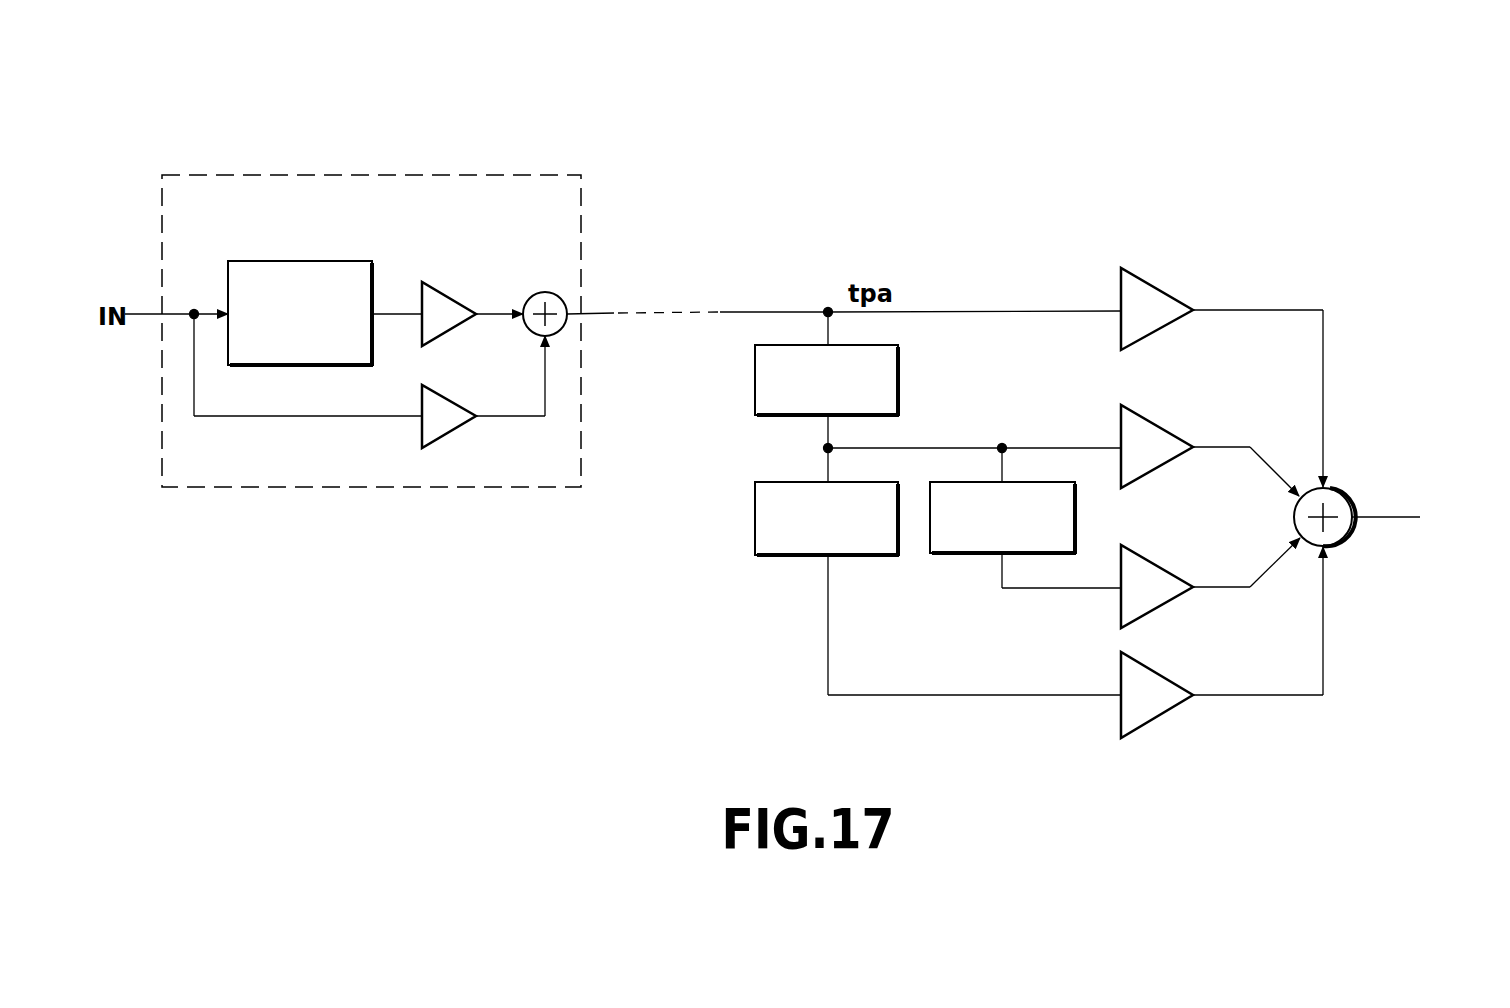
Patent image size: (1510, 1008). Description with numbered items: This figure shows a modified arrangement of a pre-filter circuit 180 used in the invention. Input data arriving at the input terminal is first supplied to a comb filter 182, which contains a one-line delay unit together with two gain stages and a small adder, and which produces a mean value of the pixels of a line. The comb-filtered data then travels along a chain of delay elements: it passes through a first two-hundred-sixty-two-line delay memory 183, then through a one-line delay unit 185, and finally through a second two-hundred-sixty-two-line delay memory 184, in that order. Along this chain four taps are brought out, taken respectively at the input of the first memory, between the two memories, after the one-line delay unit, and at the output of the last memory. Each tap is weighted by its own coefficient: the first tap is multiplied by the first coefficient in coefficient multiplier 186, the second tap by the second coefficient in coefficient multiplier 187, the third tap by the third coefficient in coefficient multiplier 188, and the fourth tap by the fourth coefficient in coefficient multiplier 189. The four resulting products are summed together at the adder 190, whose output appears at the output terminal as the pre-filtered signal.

The pre-filter circuit 180 is at (750, 276).
The comb filter 182 is at (423, 175).
The 262H delay unit 183 is at (755, 376).
The 262H delay unit 184 is at (755, 517).
The 1H delay unit 185 is at (944, 554).
The coefficient multiplier 186 is at (1157, 288).
The coefficient multiplier 187 is at (1157, 427).
The coefficient multiplier 188 is at (1157, 577).
The coefficient multiplier 189 is at (1163, 680).
The adder 190 is at (1334, 500).